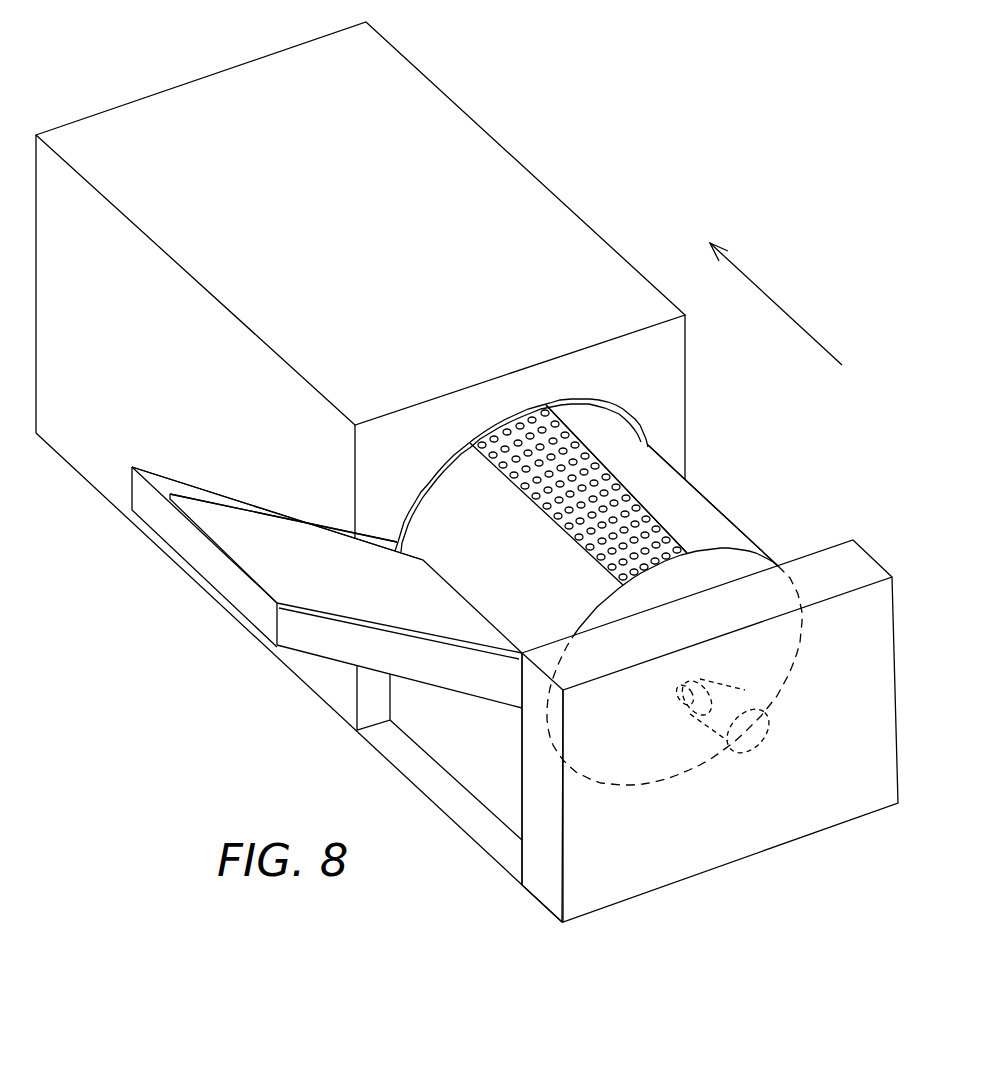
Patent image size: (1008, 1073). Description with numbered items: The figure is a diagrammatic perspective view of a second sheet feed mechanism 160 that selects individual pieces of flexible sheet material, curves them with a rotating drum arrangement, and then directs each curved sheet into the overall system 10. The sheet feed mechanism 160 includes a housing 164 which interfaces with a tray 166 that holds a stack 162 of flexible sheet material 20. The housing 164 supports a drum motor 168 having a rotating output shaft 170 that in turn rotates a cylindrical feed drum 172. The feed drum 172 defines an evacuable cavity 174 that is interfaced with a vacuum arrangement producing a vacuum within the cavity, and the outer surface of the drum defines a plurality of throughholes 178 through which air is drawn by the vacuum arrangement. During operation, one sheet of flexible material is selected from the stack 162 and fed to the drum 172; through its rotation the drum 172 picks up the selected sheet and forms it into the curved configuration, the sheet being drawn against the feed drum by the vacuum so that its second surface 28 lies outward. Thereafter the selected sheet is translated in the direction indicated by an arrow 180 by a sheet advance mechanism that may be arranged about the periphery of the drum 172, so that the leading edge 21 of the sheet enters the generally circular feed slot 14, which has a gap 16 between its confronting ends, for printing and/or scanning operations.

The system 10 is at (486, 106).
The feed slot 14 is at (408, 502).
The gap 16 is at (494, 430).
The sheet 20 is at (342, 592).
The leading edge 21 is at (587, 402).
The second surface 28 is at (676, 505).
The sheet feed mechanism 160 is at (895, 548).
The stack 162 is at (254, 513).
The housing 164 is at (557, 919).
The tray 166 is at (316, 656).
The drum motor 168 is at (771, 750).
The rotating output shaft 170 is at (774, 689).
The cylindrical feed drum 172 is at (688, 549).
The evacuable cavity 174 is at (455, 503).
The throughholes 178 is at (588, 450).
The arrow 180 is at (773, 300).